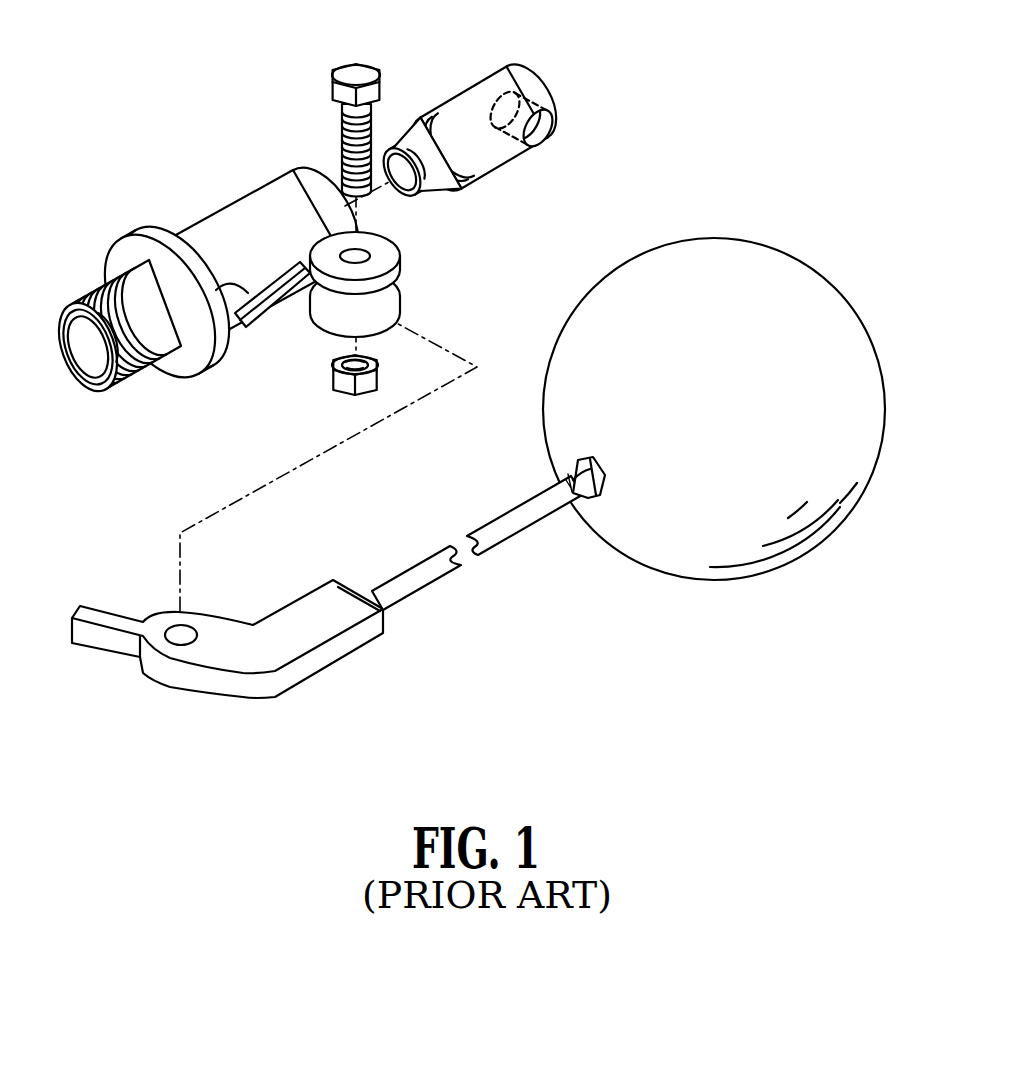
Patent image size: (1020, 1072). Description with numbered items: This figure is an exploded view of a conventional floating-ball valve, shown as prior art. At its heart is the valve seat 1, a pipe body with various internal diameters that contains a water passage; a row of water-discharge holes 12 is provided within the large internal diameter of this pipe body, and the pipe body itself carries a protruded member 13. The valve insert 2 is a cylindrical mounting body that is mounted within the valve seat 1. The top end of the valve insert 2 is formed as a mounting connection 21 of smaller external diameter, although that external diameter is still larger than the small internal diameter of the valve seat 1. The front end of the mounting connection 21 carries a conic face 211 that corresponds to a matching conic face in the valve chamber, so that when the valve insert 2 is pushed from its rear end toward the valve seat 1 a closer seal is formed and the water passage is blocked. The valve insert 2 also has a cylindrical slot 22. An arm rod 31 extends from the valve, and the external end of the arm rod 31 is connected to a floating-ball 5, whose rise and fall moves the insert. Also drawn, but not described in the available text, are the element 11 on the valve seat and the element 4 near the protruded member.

The valve seat 1 is at (212, 226).
The threaded inlet portion 11 is at (103, 292).
The water-discharge holes 12 is at (242, 327).
The protruded member 13 is at (388, 262).
The valve insert 2 is at (462, 100).
The mounting connection 21 is at (403, 190).
The conic face 211 is at (405, 148).
The cylindrical slot 22 is at (538, 134).
The bolt 4 is at (357, 76).
The floating-ball 5 is at (724, 258).
The arm rod 31 is at (425, 578).